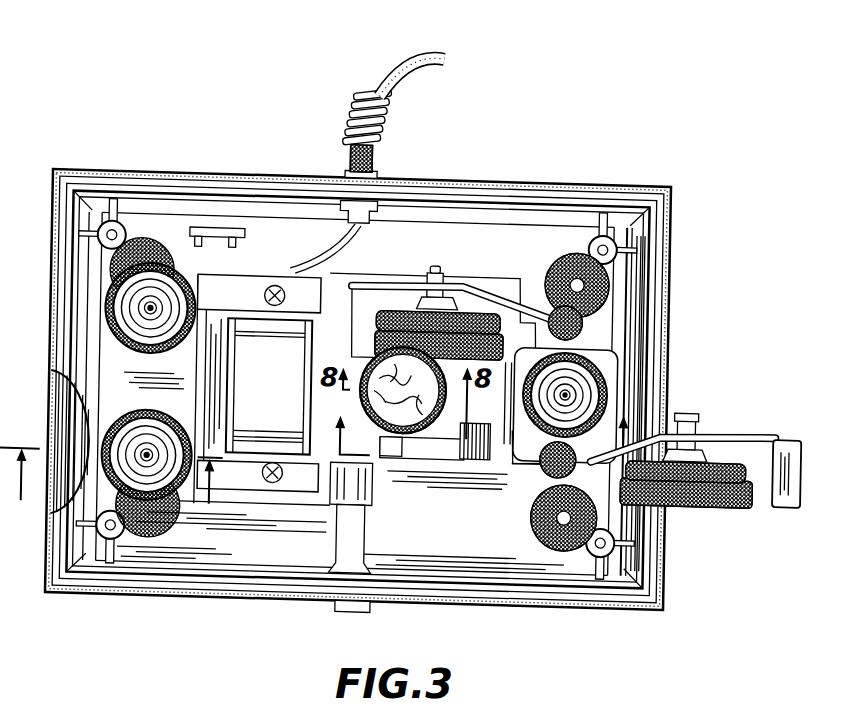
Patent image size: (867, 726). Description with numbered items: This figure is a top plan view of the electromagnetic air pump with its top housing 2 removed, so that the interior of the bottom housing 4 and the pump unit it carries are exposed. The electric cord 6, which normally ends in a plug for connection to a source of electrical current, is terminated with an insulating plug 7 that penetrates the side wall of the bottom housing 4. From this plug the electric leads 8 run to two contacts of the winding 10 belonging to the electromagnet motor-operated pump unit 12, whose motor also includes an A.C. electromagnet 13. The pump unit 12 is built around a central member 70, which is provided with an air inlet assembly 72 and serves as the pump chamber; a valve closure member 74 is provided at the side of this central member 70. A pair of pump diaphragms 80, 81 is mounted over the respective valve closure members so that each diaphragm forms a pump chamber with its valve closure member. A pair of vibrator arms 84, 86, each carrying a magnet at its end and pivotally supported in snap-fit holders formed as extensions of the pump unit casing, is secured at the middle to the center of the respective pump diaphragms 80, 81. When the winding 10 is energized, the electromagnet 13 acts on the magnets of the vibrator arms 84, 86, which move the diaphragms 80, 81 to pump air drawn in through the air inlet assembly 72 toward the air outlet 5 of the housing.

The top housing 2 is at (14, 246).
The electric cord 6 is at (412, 62).
The insulating plug 7 is at (378, 156).
The electric leads 8 is at (313, 248).
The winding 10 is at (258, 390).
The electromagnet motor-operated pump unit 12 is at (358, 361).
The A.C. electromagnet 13 is at (349, 570).
The central member 70 is at (443, 483).
The air inlet assembly 72 is at (402, 445).
The valve closure member 74 is at (508, 500).
The pump diaphragm 80 is at (691, 485).
The pump diaphragm 81 is at (436, 304).
The vibrator arm 84 is at (456, 281).
The vibrator arm 86 is at (696, 449).
The bottom housing 4 is at (111, 498).
The air outlet 5 is at (478, 419).